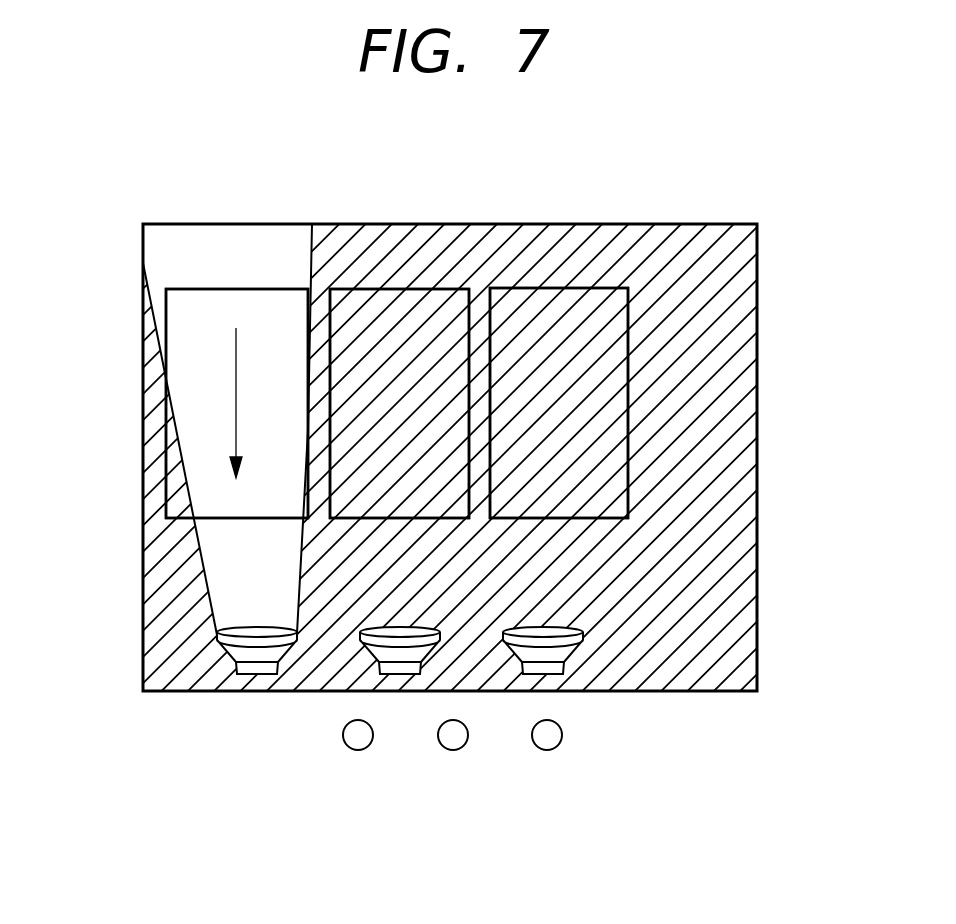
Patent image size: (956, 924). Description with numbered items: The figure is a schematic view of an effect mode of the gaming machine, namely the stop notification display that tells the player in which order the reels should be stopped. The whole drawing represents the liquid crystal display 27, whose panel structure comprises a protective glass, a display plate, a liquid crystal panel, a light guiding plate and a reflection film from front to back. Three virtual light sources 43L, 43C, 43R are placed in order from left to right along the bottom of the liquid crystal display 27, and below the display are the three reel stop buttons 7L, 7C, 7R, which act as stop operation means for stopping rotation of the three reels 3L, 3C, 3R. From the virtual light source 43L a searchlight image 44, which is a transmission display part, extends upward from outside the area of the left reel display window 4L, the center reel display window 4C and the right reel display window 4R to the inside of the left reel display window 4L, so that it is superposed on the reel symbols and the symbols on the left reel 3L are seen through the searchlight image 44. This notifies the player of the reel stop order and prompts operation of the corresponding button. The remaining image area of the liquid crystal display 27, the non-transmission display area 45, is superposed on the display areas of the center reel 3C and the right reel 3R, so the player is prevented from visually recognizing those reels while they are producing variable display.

The left reel 3L is at (258, 320).
The center reel 3C is at (418, 318).
The right reel 3R is at (573, 318).
The left reel display window 4L is at (233, 290).
The center reel display window 4C is at (388, 291).
The right reel display window 4R is at (548, 290).
The liquid crystal display 27 is at (708, 342).
The searchlight image 44 is at (232, 583).
The non-transmission display area 45 is at (708, 562).
The virtual light source 43L is at (240, 655).
The virtual light source 43C is at (402, 655).
The virtual light source 43R is at (555, 660).
The reel stop button 7L is at (348, 735).
The reel stop button 7C is at (458, 740).
The reel stop button 7R is at (548, 735).